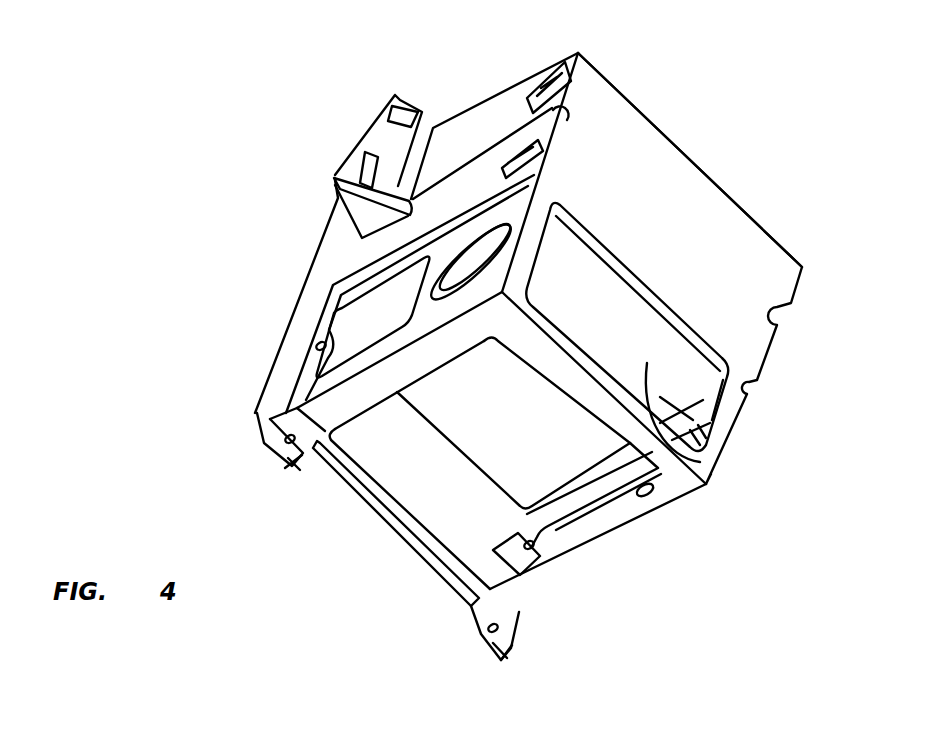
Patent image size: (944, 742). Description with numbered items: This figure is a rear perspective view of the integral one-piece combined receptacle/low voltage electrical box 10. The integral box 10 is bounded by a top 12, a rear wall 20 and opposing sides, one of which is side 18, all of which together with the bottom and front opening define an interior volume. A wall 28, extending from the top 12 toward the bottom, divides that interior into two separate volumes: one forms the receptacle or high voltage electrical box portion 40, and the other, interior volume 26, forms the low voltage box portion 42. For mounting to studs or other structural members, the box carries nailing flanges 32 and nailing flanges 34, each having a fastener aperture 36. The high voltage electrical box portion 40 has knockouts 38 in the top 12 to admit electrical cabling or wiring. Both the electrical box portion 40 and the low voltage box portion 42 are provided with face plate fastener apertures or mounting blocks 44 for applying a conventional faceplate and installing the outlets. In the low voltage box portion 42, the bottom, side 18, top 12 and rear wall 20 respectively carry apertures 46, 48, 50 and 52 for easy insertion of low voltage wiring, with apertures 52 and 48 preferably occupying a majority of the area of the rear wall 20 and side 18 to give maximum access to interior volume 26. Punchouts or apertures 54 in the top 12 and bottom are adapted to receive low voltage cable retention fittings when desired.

The integral one-piece combined receptacle/low voltage electrical box 10 is at (317, 577).
The top 12 is at (457, 220).
The side 18 is at (350, 421).
The rear wall 20 is at (679, 256).
The interior volume 26 is at (670, 366).
The wall 28 is at (528, 415).
The nailing flange 32 is at (382, 140).
The nailing flange 34 is at (292, 462).
The fastener aperture 36 is at (288, 438).
The knockout 38 is at (545, 85).
The high voltage electrical box portion 40 is at (653, 118).
The low voltage box portion 42 is at (611, 572).
The face plate fastener aperture 44 is at (320, 347).
The aperture 46 is at (577, 527).
The aperture 48 is at (418, 497).
The aperture 50 is at (363, 323).
The aperture 52 is at (698, 440).
The punchout 54 is at (493, 270).